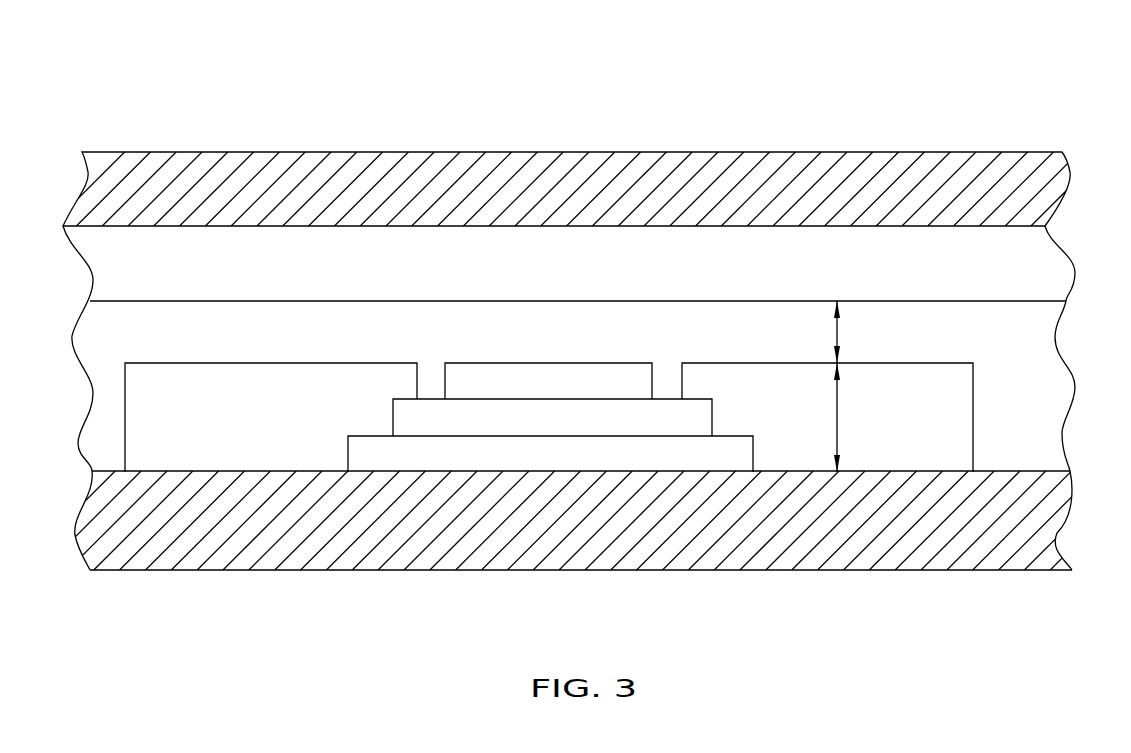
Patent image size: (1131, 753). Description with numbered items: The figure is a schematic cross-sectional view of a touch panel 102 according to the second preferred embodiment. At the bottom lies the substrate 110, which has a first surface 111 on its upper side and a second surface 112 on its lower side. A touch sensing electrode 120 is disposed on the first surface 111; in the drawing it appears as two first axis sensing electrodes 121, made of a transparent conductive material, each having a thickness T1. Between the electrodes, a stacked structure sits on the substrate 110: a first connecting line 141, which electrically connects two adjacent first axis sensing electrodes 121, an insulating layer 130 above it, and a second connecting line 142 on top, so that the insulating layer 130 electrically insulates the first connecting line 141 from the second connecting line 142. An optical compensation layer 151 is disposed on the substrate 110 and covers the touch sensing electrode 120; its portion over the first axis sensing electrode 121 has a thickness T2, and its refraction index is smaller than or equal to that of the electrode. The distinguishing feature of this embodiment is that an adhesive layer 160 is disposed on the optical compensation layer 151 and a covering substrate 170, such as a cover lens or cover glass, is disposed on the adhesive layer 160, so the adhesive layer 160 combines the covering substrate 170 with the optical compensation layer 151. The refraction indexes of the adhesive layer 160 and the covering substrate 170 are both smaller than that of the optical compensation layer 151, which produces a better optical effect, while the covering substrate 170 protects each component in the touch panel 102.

The touch panel 102 is at (989, 100).
The substrate 110 is at (443, 548).
The first surface 111 is at (1033, 471).
The second surface 112 is at (1032, 572).
The touch sensing electrode 120 is at (549, 358).
The first axis sensing electrode 121 is at (252, 403).
The insulating layer 130 is at (567, 410).
The first connecting line 141 is at (570, 455).
The second connecting line 142 is at (487, 382).
The optical compensation layer 151 is at (995, 322).
The adhesive layer 160 is at (697, 275).
The covering substrate 170 is at (697, 198).
The thickness of the first axis sensing electrode T1 is at (854, 417).
The thickness of the optical compensation layer T2 is at (857, 332).